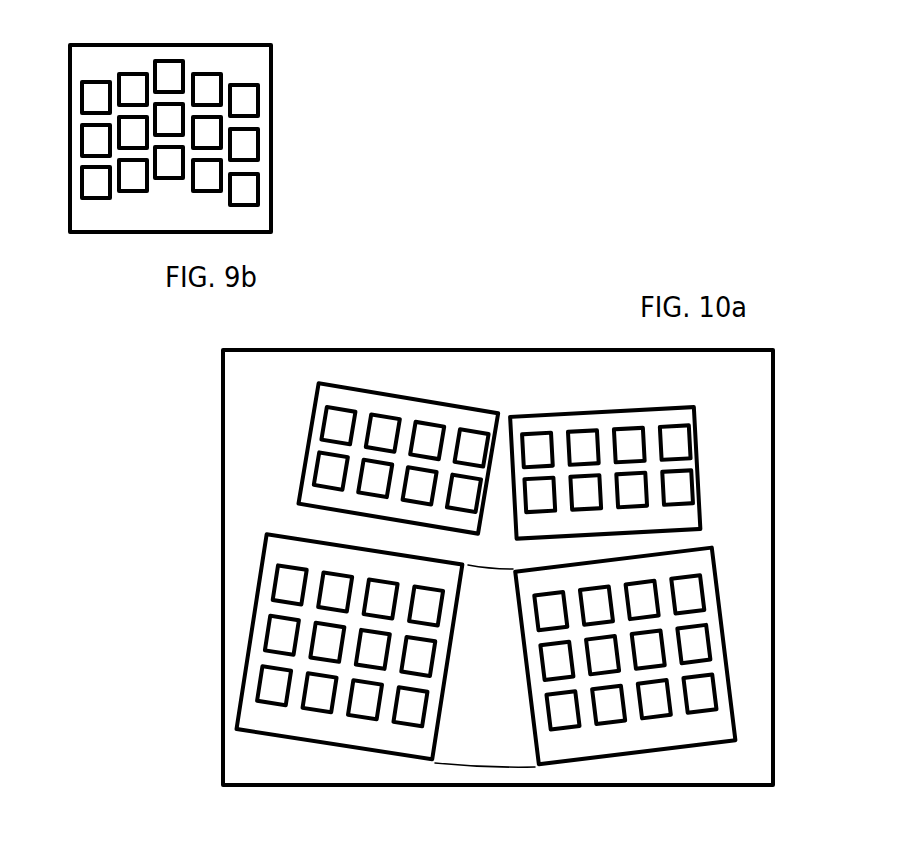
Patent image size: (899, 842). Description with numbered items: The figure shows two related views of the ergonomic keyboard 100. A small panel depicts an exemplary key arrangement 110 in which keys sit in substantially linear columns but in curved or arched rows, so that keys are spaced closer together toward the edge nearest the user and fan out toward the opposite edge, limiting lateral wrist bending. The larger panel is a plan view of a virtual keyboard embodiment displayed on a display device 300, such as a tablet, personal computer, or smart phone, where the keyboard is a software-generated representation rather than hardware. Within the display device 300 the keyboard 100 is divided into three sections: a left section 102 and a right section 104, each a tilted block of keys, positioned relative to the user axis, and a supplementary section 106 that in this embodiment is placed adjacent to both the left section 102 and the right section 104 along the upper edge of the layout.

In FIG. 9B, the array of light emitting elements 110 is at (82, 199).
In FIG. 10A, the ergonomic keyboard 100 is at (465, 567).
In FIG. 10A, the display device 300 is at (498, 567).
In FIG. 10A, the left section 102 is at (251, 627).
In FIG. 10A, the right section 104 is at (728, 668).
In FIG. 10A, the supplementary section 106 is at (598, 410).